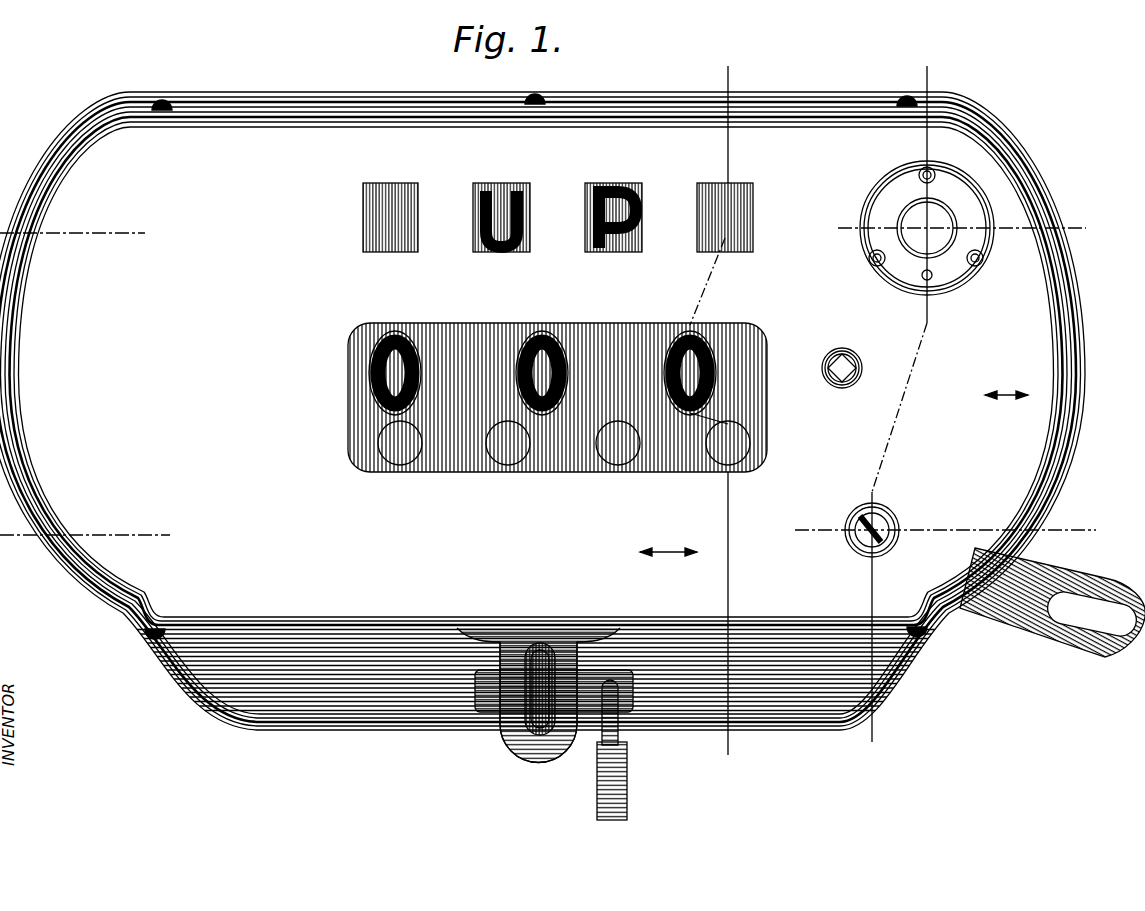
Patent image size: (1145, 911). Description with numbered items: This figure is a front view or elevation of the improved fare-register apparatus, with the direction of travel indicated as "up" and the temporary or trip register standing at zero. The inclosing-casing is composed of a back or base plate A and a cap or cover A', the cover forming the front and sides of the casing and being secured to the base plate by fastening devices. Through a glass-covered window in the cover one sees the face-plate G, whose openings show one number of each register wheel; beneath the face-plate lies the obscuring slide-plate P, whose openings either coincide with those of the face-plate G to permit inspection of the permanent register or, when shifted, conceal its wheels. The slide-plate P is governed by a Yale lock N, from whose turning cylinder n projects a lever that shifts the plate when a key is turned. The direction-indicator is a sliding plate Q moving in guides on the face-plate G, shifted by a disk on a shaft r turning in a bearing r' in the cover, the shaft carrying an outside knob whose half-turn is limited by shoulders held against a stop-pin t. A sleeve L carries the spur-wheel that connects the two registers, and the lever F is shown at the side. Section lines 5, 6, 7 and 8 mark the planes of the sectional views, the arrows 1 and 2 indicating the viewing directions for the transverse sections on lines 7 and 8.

The back or base plate A is at (536, 724).
The cap or cover A' is at (542, 411).
The mounting lever / bracket F is at (1052, 611).
The face-plate G is at (557, 397).
The slide-plate P is at (520, 460).
The sliding plate Q is at (726, 246).
The sleeve L is at (852, 372).
The Yale lock N is at (887, 542).
The turning cylinder n is at (877, 519).
The dial center opening s is at (927, 228).
The shaft r is at (902, 216).
The bearing r' is at (970, 234).
The stop-pin t is at (934, 278).
The arrow 1 is at (1006, 384).
The arrow 2 is at (668, 542).
The section line 5 is at (551, 233).
The section line 6 is at (556, 533).
The section line 7 is at (898, 405).
The section line 8 is at (711, 412).